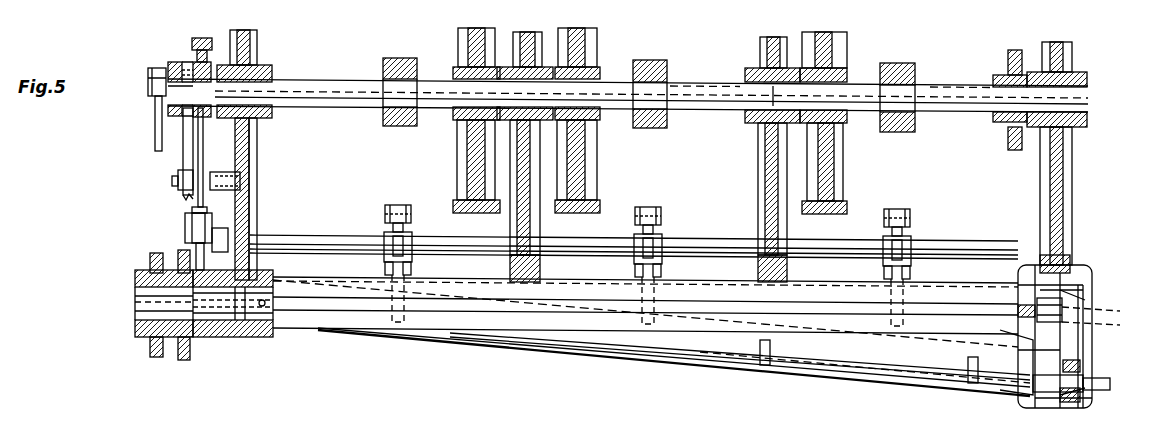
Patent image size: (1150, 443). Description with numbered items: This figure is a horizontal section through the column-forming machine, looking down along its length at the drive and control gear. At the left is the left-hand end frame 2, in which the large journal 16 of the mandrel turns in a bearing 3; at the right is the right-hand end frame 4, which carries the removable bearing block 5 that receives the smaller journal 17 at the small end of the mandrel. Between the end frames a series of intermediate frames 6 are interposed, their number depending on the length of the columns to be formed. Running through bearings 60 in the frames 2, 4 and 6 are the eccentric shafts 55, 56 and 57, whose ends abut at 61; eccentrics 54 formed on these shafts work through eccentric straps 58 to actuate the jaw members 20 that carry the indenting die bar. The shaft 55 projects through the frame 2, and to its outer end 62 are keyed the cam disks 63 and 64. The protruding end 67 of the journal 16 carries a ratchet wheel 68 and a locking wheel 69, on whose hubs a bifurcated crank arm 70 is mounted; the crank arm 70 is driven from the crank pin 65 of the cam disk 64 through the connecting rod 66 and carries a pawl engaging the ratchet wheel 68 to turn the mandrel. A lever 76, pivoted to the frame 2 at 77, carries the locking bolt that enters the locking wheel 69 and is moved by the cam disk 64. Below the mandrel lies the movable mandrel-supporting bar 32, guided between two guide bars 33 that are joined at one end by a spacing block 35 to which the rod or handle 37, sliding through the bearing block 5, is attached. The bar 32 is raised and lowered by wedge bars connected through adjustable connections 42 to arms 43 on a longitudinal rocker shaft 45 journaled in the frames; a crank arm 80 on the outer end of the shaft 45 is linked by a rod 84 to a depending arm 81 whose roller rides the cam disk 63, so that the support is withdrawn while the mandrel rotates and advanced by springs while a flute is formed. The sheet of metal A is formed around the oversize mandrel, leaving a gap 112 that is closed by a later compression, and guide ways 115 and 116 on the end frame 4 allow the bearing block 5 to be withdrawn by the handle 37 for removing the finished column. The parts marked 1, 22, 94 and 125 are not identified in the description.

The frame base 1 is at (1068, 408).
The left-hand end frame 2 is at (257, 158).
The bearing 3 is at (240, 338).
The right-hand end frame 4 is at (1072, 183).
The removable bearing block 5 is at (1080, 366).
The intermediate frames 6 is at (540, 262).
The journal 16 is at (218, 310).
The smaller journal 17 is at (1062, 320).
The jaw members 20 is at (450, 442).
The roller shaft 22 is at (565, 435).
The mandrel-supporting bar 32 is at (892, 365).
The guide bars 33 is at (803, 348).
The spacing block 35 is at (1020, 380).
The rod or handle 37 is at (1104, 402).
The adjustable connections 42 is at (384, 258).
The arms 43 is at (405, 208).
The rocker shaft 45 is at (305, 240).
The eccentrics 54 is at (395, 85).
The eccentric shaft 55 is at (324, 98).
The eccentric shaft 56 is at (962, 112).
The eccentric shaft 57 is at (710, 106).
The eccentric straps 58 is at (388, 128).
The bearings 60 is at (272, 66).
The shaft abutment 61 is at (773, 92).
The outer end of shaft 62 is at (185, 96).
The cam disk 63 is at (200, 72).
The cam disk 64 is at (168, 66).
The crank pin 65 is at (148, 78).
The connecting rod 66 is at (157, 145).
The protruding end of journal 67 is at (135, 310).
The ratchet wheel 68 is at (150, 263).
The locking wheel 69 is at (182, 358).
The bifurcated crank arm 70 is at (140, 338).
The lever 76 is at (183, 170).
The lever pivot 77 is at (172, 190).
The crank arm 80 is at (185, 235).
The depending arm 81 is at (200, 38).
The rod 84 is at (208, 142).
The gear 94 is at (457, 166).
The gap 112 is at (330, 312).
The guide way 115 is at (1060, 298).
The guide way 116 is at (1070, 347).
The packing 125 is at (1028, 318).
The sheet of metal A is at (415, 327).